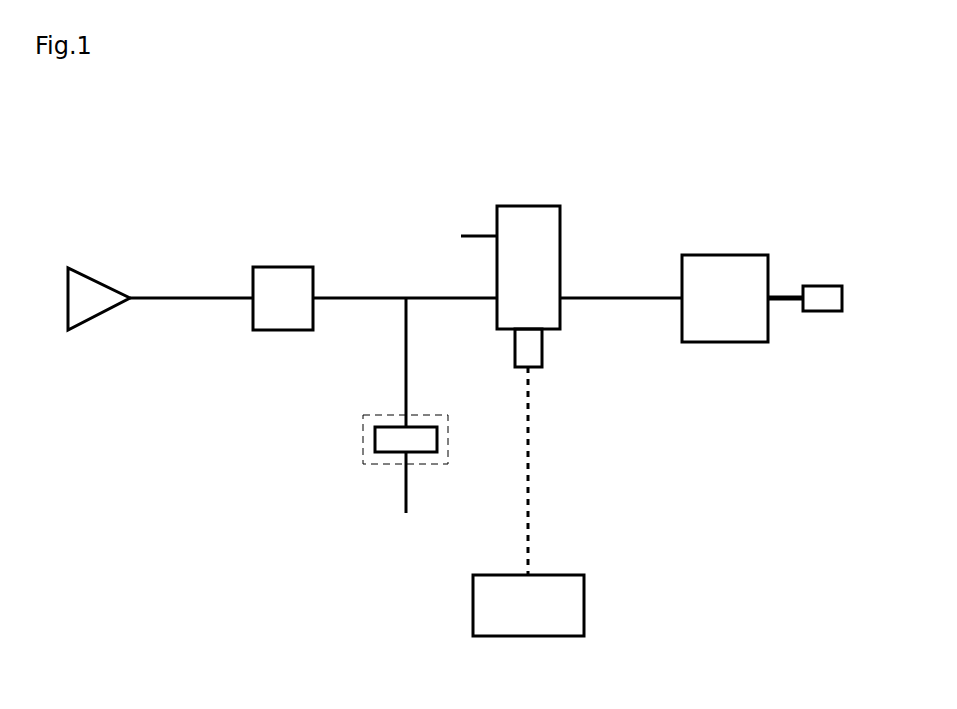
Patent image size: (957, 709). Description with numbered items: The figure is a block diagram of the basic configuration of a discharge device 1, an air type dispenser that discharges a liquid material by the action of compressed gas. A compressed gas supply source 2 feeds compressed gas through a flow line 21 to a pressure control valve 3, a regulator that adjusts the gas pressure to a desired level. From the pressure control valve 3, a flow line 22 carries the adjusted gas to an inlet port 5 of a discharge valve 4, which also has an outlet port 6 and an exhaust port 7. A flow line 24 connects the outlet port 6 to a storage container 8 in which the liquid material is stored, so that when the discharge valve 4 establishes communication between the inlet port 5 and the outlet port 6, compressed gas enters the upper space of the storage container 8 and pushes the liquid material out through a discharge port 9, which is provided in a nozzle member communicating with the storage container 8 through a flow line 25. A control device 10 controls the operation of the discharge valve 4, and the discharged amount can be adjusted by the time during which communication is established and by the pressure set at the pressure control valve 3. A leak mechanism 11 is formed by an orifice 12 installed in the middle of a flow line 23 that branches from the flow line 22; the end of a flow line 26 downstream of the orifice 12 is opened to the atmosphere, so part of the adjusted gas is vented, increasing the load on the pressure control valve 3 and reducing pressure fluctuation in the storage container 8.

The discharge device 1 is at (741, 532).
The compressed gas supply source 2 is at (113, 242).
The pressure control valve 3 is at (286, 247).
The discharge valve 4 is at (534, 208).
The inlet port 5 is at (497, 349).
The outlet port 6 is at (621, 240).
The exhaust port 7 is at (457, 182).
The storage container 8 is at (729, 255).
The discharge port 9 is at (843, 256).
The control device 10 is at (591, 501).
The leak mechanism 11 is at (332, 433).
The orifice 12 is at (346, 474).
The flow line 21 is at (191, 248).
The flow line 22 is at (405, 249).
The flow line 23 is at (331, 362).
The flow line 24 is at (657, 247).
The flow line 25 is at (798, 247).
The flow line 26 is at (457, 482).